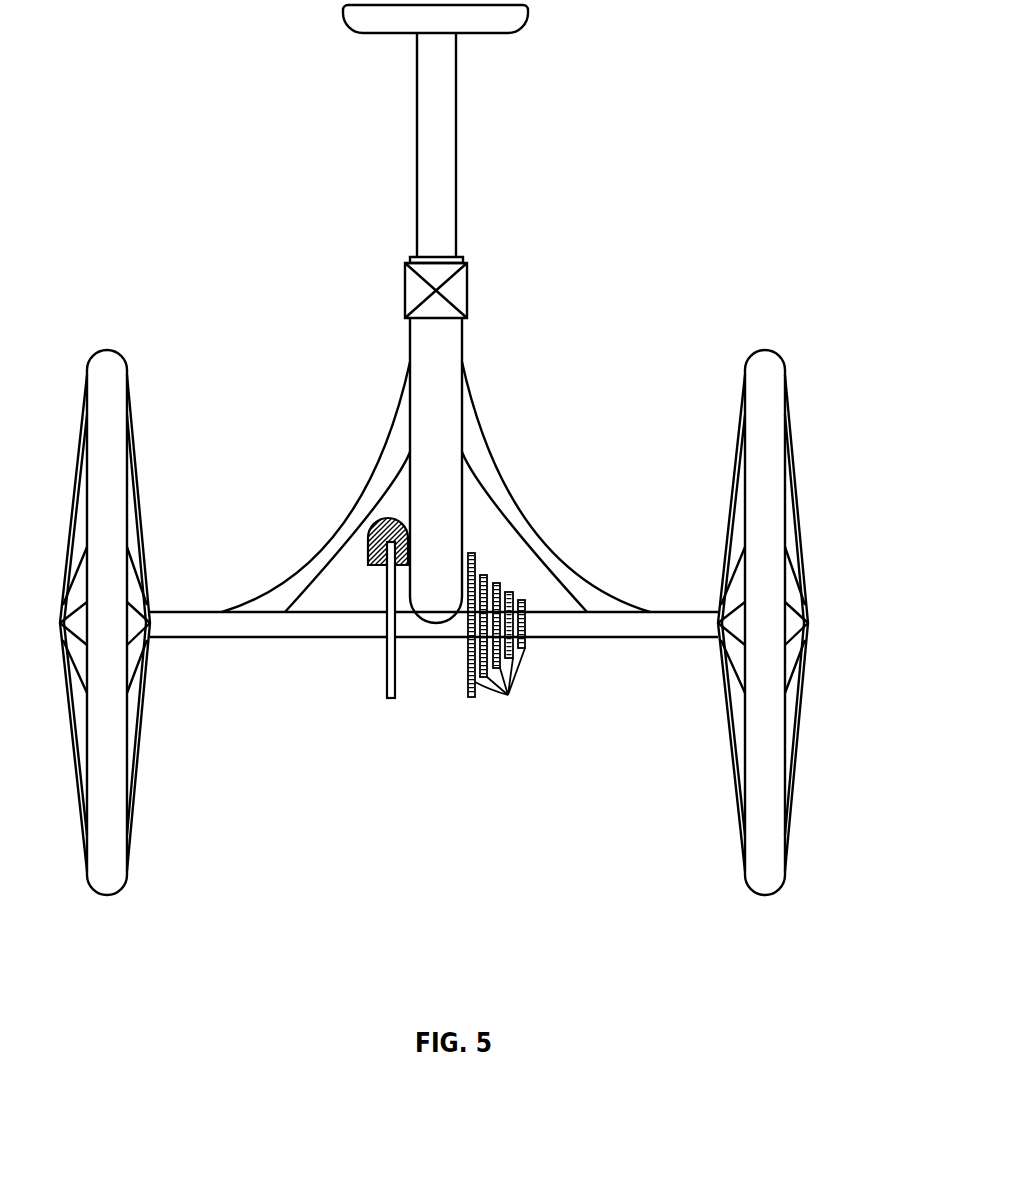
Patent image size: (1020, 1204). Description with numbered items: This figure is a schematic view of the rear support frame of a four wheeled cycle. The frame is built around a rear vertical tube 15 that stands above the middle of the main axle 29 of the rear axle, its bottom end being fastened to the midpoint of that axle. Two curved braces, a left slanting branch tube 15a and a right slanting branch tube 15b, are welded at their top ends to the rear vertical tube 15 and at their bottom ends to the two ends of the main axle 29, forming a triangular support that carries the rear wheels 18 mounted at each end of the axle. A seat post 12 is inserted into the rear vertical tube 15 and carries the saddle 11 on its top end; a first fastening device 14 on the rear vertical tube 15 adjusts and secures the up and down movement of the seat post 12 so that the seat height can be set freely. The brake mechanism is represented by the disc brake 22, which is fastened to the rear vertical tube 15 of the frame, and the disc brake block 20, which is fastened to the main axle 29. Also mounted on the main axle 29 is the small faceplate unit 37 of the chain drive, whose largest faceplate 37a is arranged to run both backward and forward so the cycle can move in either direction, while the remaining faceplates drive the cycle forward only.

The saddle 11 is at (520, 27).
The seat post 12 is at (456, 163).
The first fastening device 14 is at (462, 288).
The rear vertical tube 15 is at (433, 382).
The left slanting branch tube 15a is at (367, 475).
The right slanting branch tube 15b is at (500, 488).
The rear wheel 18 is at (758, 361).
The disc brake block 20 is at (460, 773).
The disc brake 22 is at (375, 565).
The main axle 29 is at (170, 625).
The small faceplate unit 37 is at (508, 695).
The largest faceplate 37a is at (472, 697).